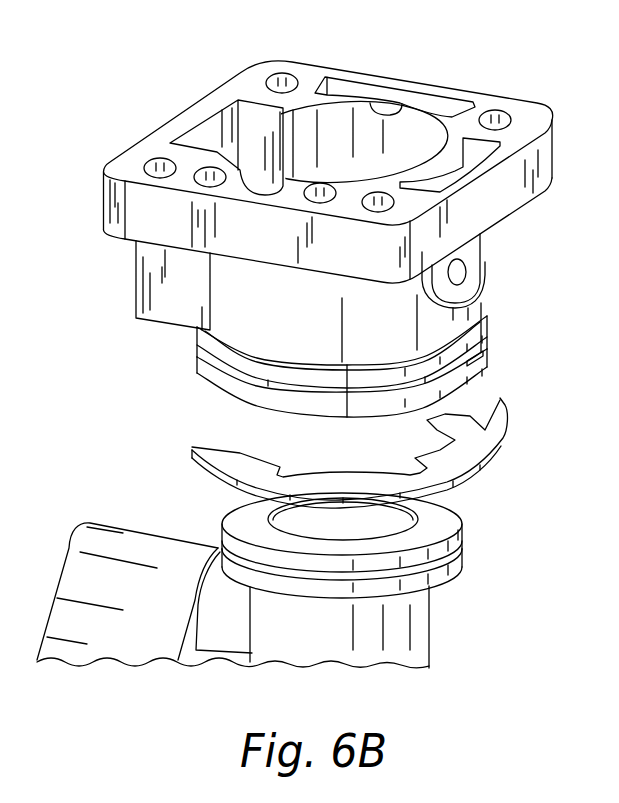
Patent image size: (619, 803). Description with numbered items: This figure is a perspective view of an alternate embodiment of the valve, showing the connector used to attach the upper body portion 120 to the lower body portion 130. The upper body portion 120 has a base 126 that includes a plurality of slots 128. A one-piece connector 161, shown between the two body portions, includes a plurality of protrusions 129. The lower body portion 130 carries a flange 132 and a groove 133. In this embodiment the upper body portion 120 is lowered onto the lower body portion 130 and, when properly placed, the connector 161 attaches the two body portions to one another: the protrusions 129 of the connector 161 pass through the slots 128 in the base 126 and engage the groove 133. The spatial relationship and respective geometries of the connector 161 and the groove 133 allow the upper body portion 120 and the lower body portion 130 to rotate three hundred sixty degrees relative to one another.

The upper body portion 120 is at (161, 99).
The base 126 is at (313, 418).
The slots 128 is at (238, 377).
The protrusions 129 is at (265, 457).
The connector 161 is at (477, 477).
The flange 132 is at (467, 527).
The groove 133 is at (433, 565).
The lower body portion 130 is at (183, 672).